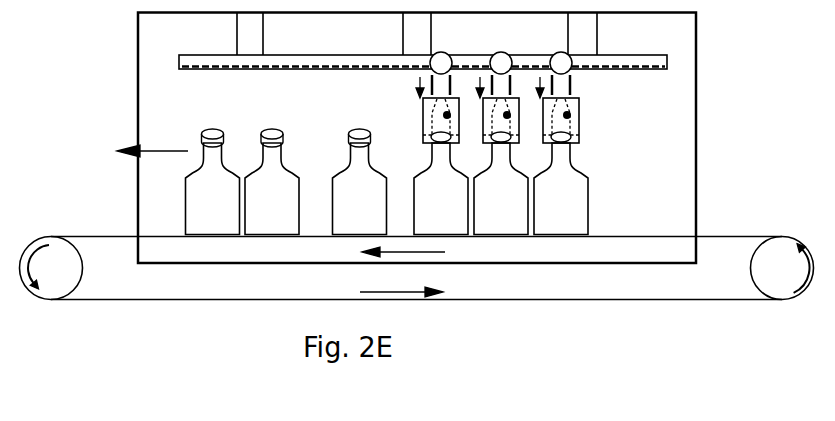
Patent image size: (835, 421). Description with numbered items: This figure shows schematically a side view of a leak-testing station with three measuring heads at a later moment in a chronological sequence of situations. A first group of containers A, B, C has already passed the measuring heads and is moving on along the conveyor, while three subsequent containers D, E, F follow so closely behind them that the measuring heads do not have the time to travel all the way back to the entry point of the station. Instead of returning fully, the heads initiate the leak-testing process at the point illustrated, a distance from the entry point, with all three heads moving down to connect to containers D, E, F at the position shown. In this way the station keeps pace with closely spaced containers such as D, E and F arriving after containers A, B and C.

The container A is at (213, 182).
The container B is at (272, 182).
The container C is at (360, 182).
The container D is at (441, 143).
The container E is at (501, 143).
The container F is at (561, 143).